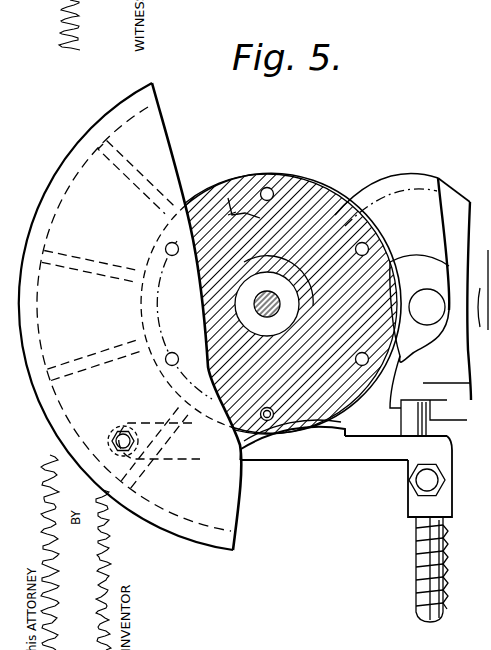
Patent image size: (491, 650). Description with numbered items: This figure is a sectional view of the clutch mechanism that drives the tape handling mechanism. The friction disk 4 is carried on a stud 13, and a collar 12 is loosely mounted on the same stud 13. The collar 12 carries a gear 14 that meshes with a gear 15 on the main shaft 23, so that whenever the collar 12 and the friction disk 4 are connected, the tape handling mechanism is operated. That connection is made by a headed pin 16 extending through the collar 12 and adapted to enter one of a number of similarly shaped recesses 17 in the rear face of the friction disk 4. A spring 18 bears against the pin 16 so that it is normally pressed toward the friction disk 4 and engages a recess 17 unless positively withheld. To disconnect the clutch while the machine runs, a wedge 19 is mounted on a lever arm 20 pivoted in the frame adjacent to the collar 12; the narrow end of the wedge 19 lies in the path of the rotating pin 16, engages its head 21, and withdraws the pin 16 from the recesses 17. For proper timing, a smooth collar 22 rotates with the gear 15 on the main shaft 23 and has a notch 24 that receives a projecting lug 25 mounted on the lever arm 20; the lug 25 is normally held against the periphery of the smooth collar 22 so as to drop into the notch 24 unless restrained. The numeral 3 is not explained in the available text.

The frame 3 is at (482, 90).
The friction disk 4 is at (235, 551).
The collar 12 is at (310, 183).
The stud 13 is at (166, 332).
The gear 14 is at (172, 329).
The gear 15 is at (402, 178).
The headed pin 16 is at (236, 452).
The recesses 17 is at (383, 242).
The spring 18 is at (292, 150).
The wedge 19 is at (268, 455).
The lever arm 20 is at (324, 457).
The head 21 is at (433, 383).
The smooth collar 22 is at (450, 203).
The main shaft 23 is at (429, 310).
The notch 24 is at (447, 420).
The projecting lug 25 is at (448, 440).